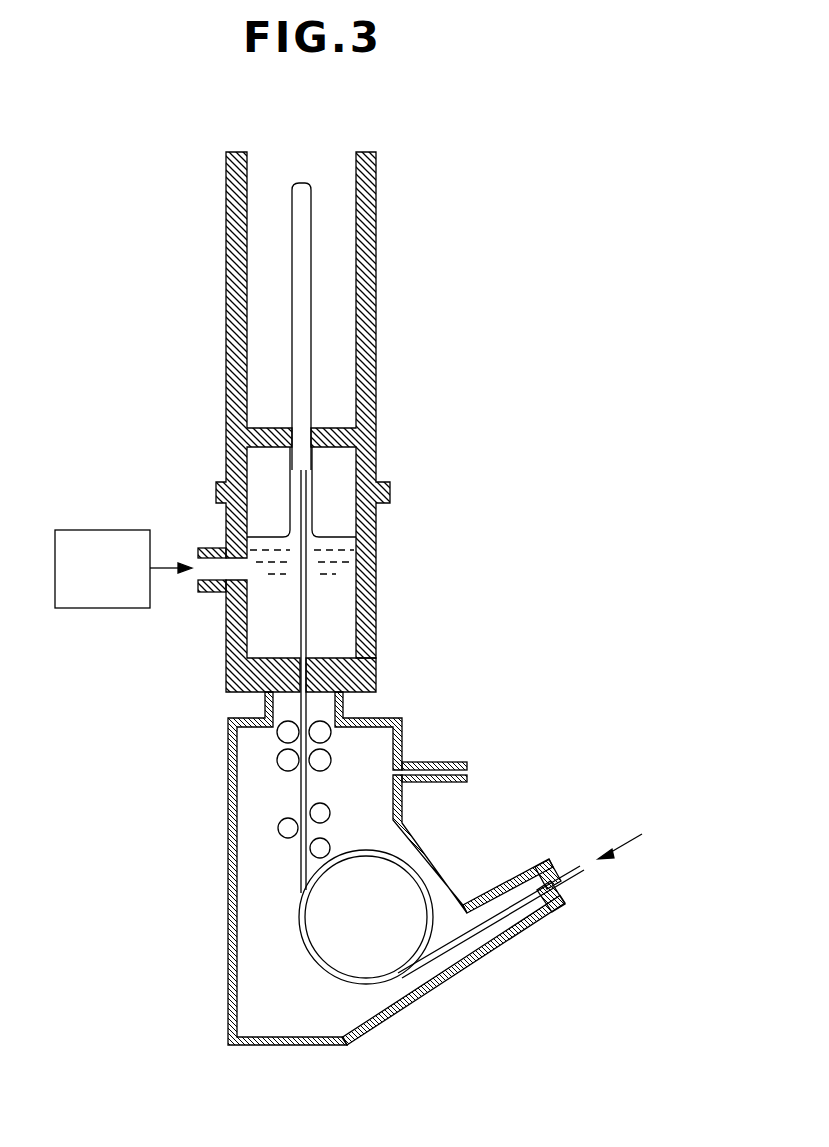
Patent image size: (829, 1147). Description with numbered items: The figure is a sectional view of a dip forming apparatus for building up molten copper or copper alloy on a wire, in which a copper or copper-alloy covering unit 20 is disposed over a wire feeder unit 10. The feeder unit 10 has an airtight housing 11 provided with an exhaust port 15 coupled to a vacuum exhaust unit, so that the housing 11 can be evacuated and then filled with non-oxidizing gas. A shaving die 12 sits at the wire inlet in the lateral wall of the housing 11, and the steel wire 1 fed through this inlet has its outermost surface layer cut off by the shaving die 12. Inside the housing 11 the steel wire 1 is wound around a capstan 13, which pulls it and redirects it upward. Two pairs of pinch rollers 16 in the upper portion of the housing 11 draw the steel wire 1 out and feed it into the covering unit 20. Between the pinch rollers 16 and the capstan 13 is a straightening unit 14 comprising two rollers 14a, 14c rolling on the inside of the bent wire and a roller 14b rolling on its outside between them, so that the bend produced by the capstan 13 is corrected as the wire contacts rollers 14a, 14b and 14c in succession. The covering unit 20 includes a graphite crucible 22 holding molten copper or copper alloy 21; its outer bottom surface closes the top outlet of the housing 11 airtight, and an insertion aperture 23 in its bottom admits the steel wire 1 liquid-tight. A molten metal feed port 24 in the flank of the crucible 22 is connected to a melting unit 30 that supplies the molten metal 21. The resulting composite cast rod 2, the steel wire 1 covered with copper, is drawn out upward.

The steel wire 1 is at (578, 878).
The composite cast rod 2 is at (302, 478).
The wire feeder unit 10 is at (340, 868).
The airtight housing 11 is at (228, 857).
The shaving die 12 is at (540, 866).
The capstan 13 is at (383, 960).
The straightening unit 14 is at (317, 836).
The roller 14a is at (286, 868).
The roller 14b is at (285, 822).
The roller 14c is at (327, 808).
The exhaust port 15 is at (428, 778).
The pinch rollers 16 is at (336, 734).
The copper or copper-alloy covering unit 20 is at (328, 422).
The molten copper or copper alloy 21 is at (342, 622).
The crucible 22 is at (237, 668).
The insertion aperture 23 is at (302, 682).
The molten metal feed port 24 is at (225, 568).
The copper or copper-alloy melting unit 30 is at (97, 536).